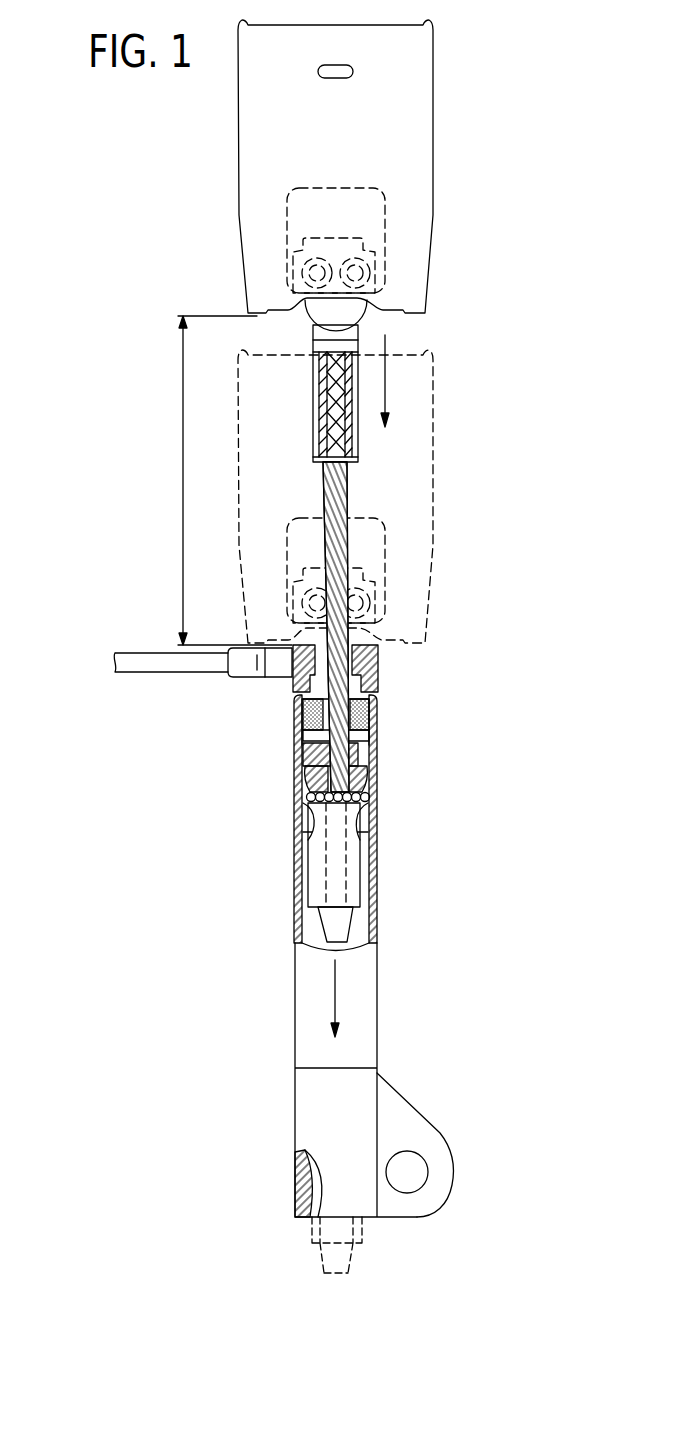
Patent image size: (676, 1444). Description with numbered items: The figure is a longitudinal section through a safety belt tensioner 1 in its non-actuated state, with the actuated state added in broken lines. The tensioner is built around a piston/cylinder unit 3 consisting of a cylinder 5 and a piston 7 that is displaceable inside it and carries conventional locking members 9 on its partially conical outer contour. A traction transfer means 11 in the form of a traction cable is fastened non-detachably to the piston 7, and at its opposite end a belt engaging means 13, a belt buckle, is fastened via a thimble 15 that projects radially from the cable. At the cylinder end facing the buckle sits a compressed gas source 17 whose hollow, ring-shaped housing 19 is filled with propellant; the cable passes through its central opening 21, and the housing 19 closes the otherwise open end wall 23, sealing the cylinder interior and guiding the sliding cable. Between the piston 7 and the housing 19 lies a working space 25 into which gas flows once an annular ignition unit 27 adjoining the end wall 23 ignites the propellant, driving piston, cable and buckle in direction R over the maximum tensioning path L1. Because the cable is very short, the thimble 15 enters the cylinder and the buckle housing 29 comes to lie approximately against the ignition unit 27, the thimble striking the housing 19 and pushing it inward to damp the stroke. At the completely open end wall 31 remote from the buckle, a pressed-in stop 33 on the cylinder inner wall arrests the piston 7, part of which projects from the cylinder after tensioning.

The tensioner 1 is at (440, 706).
The piston/cylinder unit 3 is at (380, 880).
The cylinder 5 is at (294, 885).
The piston 7 is at (372, 771).
The locking members 9 is at (367, 799).
The traction transfer means 11 is at (345, 493).
The belt engaging means 13 is at (417, 88).
The thimble 15 is at (313, 404).
The compressed gas source 17 is at (372, 711).
The housing 19 is at (302, 721).
The central opening 21 is at (305, 753).
The end wall 23 is at (298, 682).
The working space 25 is at (362, 738).
The ignition unit 27 is at (350, 672).
The housing of the belt buckle 29 is at (433, 244).
The end wall 31 is at (305, 1222).
The stop 33 is at (296, 1186).
The maximum tensioning path L1 is at (180, 475).
The direction of the tensioning process R is at (387, 347).